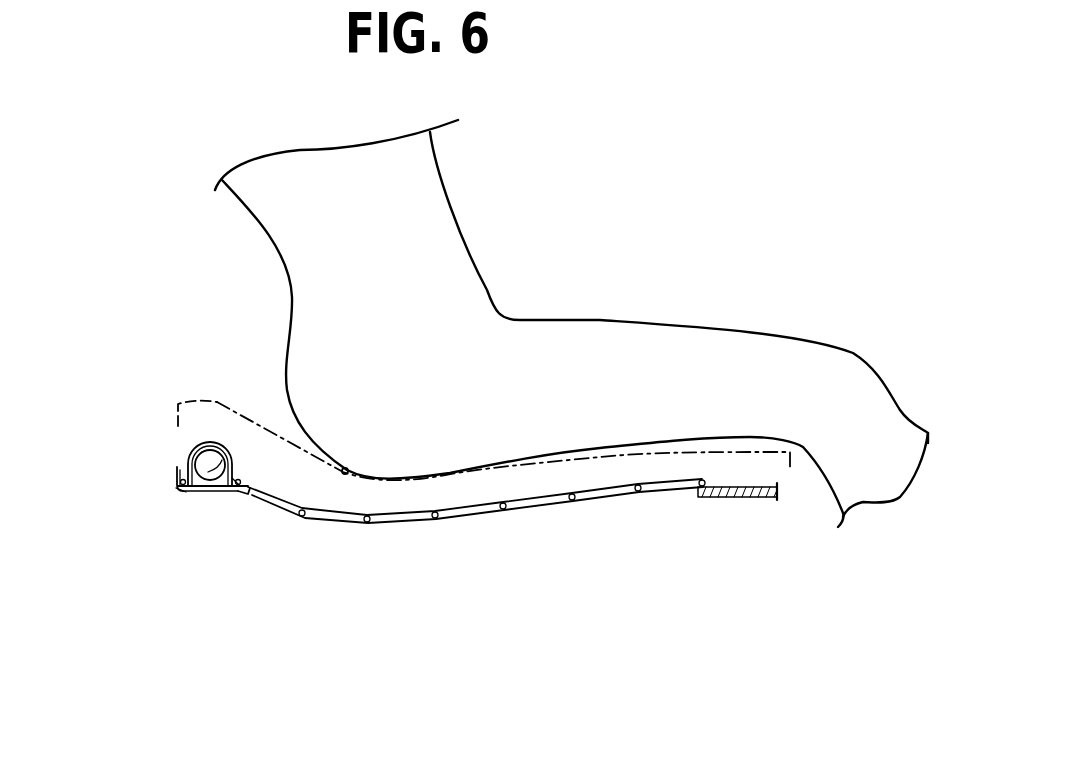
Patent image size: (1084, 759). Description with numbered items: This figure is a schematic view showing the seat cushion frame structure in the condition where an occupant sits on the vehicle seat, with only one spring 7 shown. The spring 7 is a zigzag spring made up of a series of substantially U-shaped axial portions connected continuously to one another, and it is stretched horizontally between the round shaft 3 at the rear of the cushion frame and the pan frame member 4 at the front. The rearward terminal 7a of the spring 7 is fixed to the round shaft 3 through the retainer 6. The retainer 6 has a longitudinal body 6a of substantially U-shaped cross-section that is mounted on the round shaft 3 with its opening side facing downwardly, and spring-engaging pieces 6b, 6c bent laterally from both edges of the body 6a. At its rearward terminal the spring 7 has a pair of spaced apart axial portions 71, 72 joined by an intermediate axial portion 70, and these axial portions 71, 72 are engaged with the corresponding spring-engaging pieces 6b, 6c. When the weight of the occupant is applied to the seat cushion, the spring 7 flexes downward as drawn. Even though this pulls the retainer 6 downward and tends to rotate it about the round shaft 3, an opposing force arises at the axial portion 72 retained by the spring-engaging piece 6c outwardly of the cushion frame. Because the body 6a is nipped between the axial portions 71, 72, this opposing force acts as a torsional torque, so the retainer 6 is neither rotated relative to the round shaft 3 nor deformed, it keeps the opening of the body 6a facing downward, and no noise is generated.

The round shaft 3 is at (208, 472).
The pan frame member 4 is at (725, 500).
The retainer 6 is at (215, 442).
The body 6a is at (230, 447).
The spring-engaging piece 6b is at (248, 494).
The spring-engaging piece 6c is at (175, 473).
The spring 7 is at (475, 517).
The rearward terminal 7a is at (194, 500).
The intermediate axial portion 70 is at (221, 490).
The axial portion 71 is at (242, 478).
The axial portion 72 is at (173, 492).